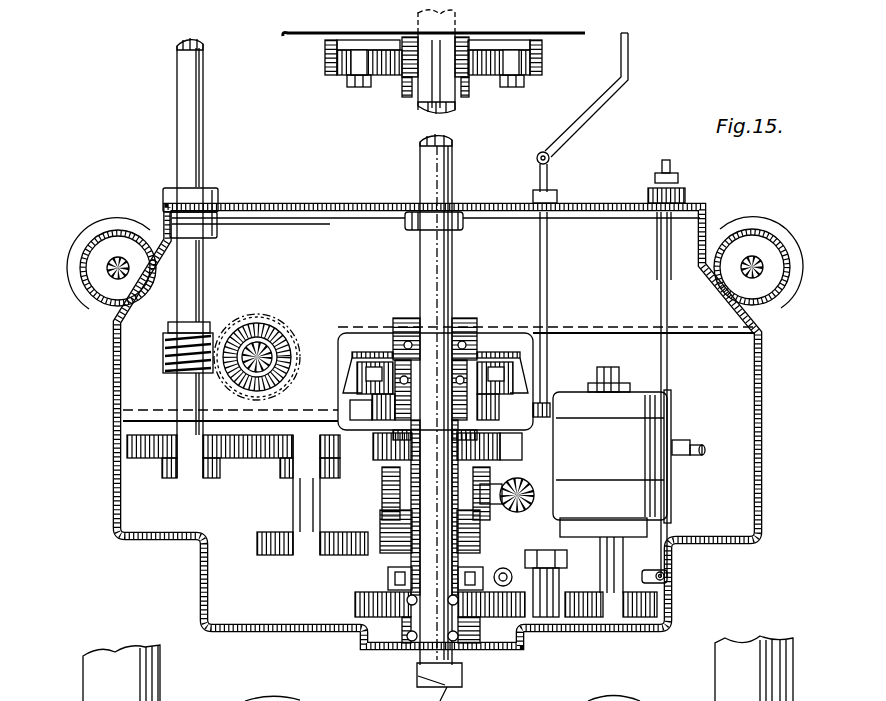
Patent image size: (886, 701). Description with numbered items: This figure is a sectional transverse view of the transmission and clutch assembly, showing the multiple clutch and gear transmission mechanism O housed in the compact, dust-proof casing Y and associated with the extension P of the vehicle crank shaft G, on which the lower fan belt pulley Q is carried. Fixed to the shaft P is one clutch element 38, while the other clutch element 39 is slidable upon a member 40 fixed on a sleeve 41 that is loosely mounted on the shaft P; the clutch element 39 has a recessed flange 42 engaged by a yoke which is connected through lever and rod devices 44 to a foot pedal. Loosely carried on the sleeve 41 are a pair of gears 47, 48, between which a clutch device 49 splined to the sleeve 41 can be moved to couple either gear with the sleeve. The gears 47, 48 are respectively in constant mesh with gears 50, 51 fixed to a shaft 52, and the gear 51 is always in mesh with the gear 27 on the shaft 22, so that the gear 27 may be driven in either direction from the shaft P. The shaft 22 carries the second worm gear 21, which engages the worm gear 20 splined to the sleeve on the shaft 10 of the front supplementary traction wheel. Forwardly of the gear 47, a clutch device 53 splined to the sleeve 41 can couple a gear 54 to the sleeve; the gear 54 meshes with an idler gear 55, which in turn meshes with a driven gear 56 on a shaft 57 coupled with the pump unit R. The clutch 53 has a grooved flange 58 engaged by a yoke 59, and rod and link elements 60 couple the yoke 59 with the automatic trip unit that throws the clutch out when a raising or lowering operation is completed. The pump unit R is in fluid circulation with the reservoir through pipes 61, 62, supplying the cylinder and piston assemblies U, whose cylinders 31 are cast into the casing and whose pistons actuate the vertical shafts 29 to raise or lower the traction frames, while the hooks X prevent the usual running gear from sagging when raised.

The shaft 10 is at (263, 330).
The worm gear 20 is at (235, 325).
The second worm gear 21 is at (165, 355).
The shaft 22 is at (178, 165).
The gear 27 is at (118, 438).
The vertical shaft 29 is at (112, 265).
The cylinder 31 is at (110, 238).
The clutch element 38 is at (503, 355).
The clutch element 39 is at (372, 372).
The member 40 is at (385, 362).
The sleeve 41 is at (505, 447).
The recessed flange 42 is at (362, 412).
The lever and rod devices 44 is at (568, 142).
The gear 47 is at (387, 522).
The gear 48 is at (380, 458).
The clutch device 49 is at (392, 505).
The gear 50 is at (273, 557).
The gear 51 is at (270, 457).
The shaft 52 is at (295, 505).
The clutch device 53 is at (392, 580).
The gear 54 is at (362, 600).
The idler gear 55 is at (560, 592).
The driven gear 56 is at (643, 632).
The shaft 57 is at (625, 555).
The grooved flange 58 is at (480, 555).
The yoke 59 is at (392, 563).
The rod and link elements 60 is at (668, 348).
The pipe 61 is at (610, 368).
The pipe 62 is at (698, 455).
The crank shaft G is at (445, 92).
The multiple clutch and gear transmission mechanism O is at (280, 637).
The extension of the crank shaft P is at (453, 266).
The lower fan belt pulley Q is at (325, 62).
The pump unit R is at (568, 390).
The cylinder and piston assemblies U is at (290, 205).
The hooks X is at (150, 462).
The casing Y is at (364, 202).